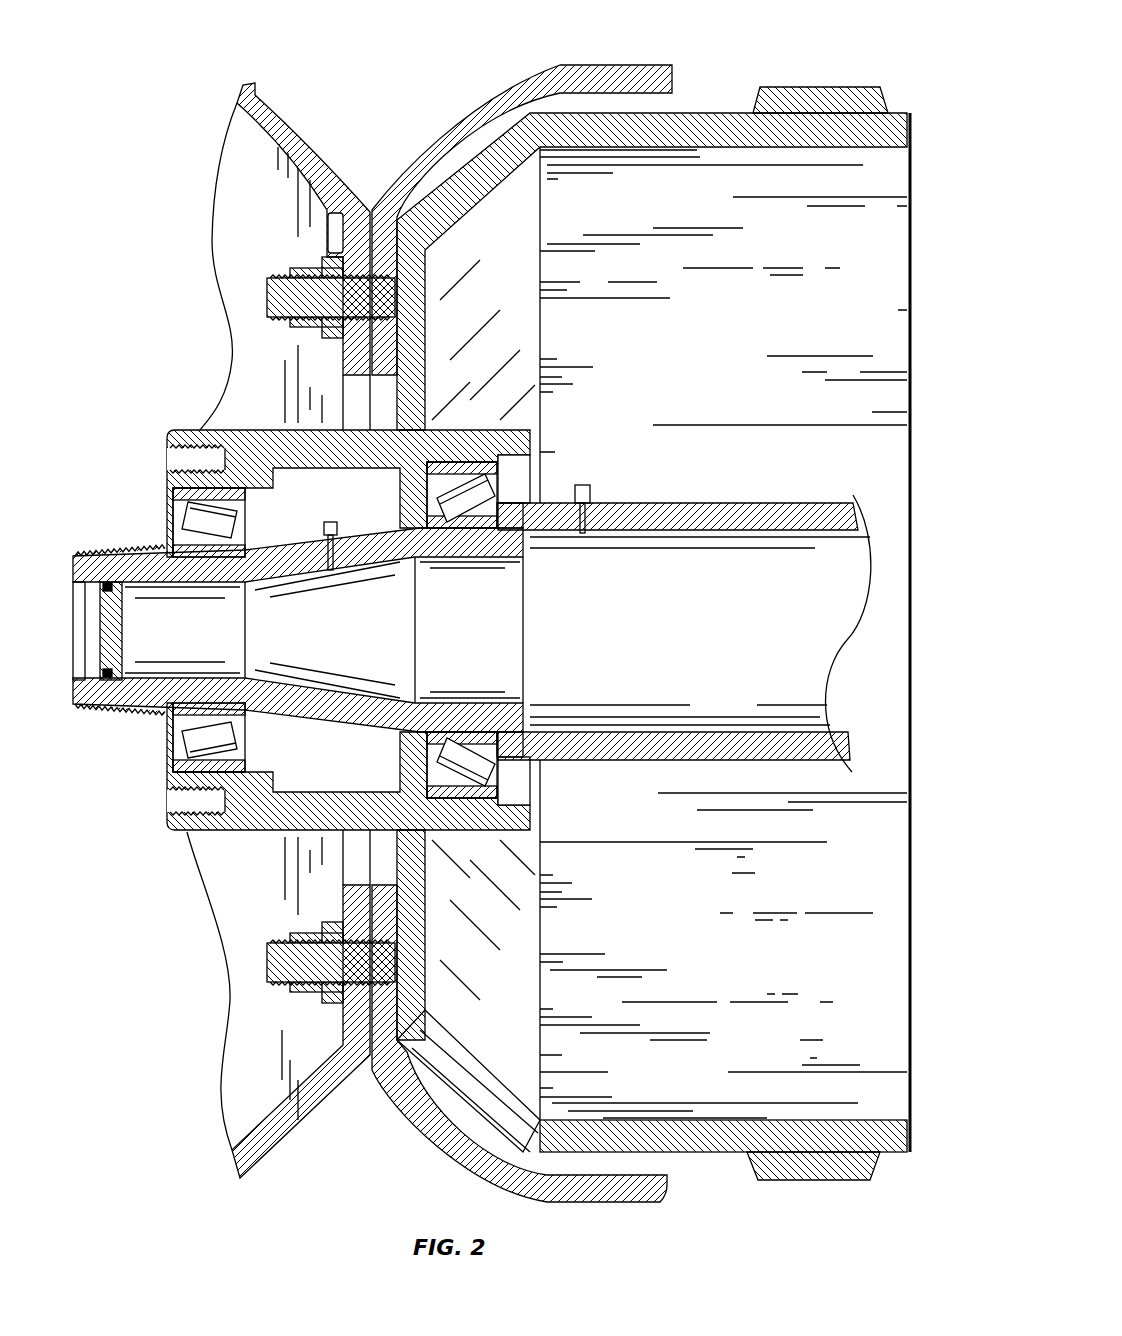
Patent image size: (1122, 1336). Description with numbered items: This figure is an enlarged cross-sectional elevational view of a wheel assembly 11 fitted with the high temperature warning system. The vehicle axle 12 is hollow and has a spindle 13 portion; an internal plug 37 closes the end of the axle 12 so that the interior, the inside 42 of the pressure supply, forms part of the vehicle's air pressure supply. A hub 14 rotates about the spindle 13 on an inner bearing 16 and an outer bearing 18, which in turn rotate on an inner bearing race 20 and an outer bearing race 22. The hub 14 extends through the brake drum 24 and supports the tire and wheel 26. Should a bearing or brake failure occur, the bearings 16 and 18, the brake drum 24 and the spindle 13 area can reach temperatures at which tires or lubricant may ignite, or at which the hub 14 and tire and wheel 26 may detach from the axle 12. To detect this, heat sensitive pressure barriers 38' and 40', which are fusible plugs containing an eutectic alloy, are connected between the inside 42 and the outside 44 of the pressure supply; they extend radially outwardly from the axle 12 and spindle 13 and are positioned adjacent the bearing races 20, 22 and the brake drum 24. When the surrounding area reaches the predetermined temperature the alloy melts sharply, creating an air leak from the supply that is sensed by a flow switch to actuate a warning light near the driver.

The wheel assembly 11 is at (172, 42).
The axle 12 is at (770, 503).
The spindle 13 is at (313, 703).
The hub 14 is at (185, 430).
The inner bearing 16 is at (487, 492).
The outer bearing 18 is at (178, 503).
The inner bearing race 20 is at (503, 525).
The outer bearing race 22 is at (178, 545).
The brake drum 24 is at (720, 112).
The tire and wheel 26 is at (258, 85).
The internal plug 37 is at (103, 630).
The heat sensitive pressure barrier 38' is at (360, 528).
The heat sensitive pressure barrier 40' is at (610, 492).
The inside of the pressure supply 42 is at (757, 645).
The outside of the pressure supply 44 is at (752, 327).